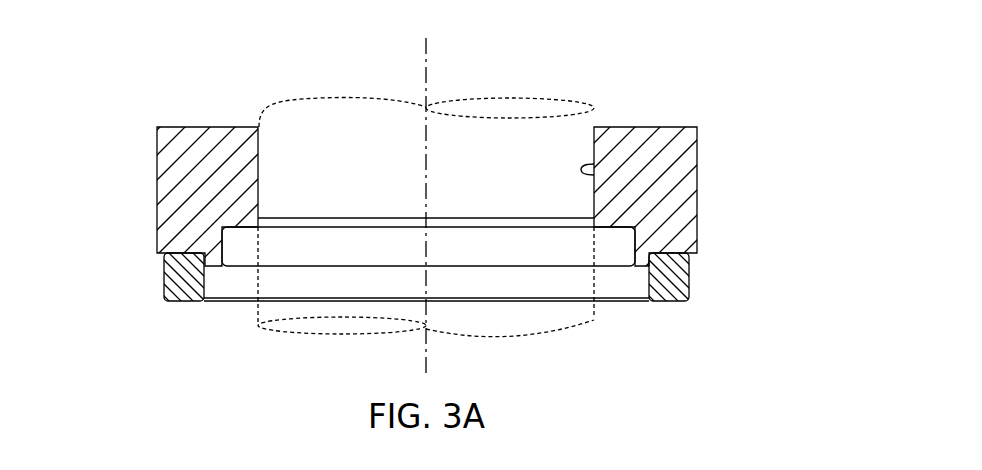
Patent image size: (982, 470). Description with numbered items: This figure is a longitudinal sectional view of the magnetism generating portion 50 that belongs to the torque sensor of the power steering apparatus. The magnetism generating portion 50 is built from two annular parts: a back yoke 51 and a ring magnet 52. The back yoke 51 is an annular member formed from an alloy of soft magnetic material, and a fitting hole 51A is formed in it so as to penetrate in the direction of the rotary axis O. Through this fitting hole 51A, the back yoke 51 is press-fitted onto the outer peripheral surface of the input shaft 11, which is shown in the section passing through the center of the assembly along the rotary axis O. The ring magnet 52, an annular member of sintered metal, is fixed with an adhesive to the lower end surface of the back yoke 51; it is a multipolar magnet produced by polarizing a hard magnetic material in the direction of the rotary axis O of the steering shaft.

The magnetism generating portion 50 is at (432, 209).
The back yoke 51 is at (163, 167).
The fitting hole 51A is at (594, 165).
The ring magnet 52 is at (168, 287).
The input shaft 11 is at (595, 318).
The rotary axis O is at (426, 80).